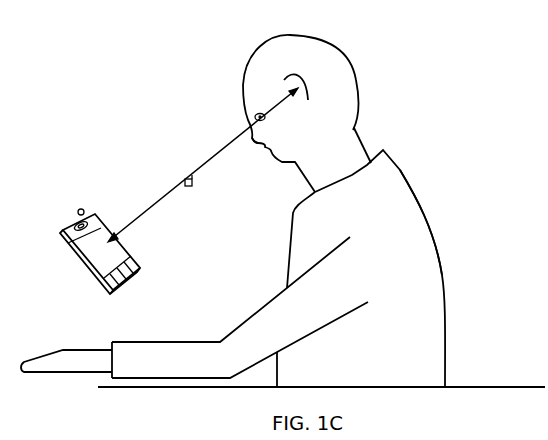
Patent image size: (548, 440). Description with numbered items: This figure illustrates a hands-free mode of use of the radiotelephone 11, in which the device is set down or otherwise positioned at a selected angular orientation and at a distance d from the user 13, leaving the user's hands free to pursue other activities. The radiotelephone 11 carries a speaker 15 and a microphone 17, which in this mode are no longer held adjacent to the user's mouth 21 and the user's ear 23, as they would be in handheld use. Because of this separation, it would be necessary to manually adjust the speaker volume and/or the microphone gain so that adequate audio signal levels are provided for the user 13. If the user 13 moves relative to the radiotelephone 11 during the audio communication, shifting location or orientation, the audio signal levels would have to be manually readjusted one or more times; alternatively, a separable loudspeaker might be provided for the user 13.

The radiotelephone 11 is at (92, 267).
The user 13 is at (400, 208).
The speaker 15 is at (83, 221).
The microphone 17 is at (138, 270).
The user's mouth 21 is at (267, 157).
The user's ear 23 is at (305, 78).